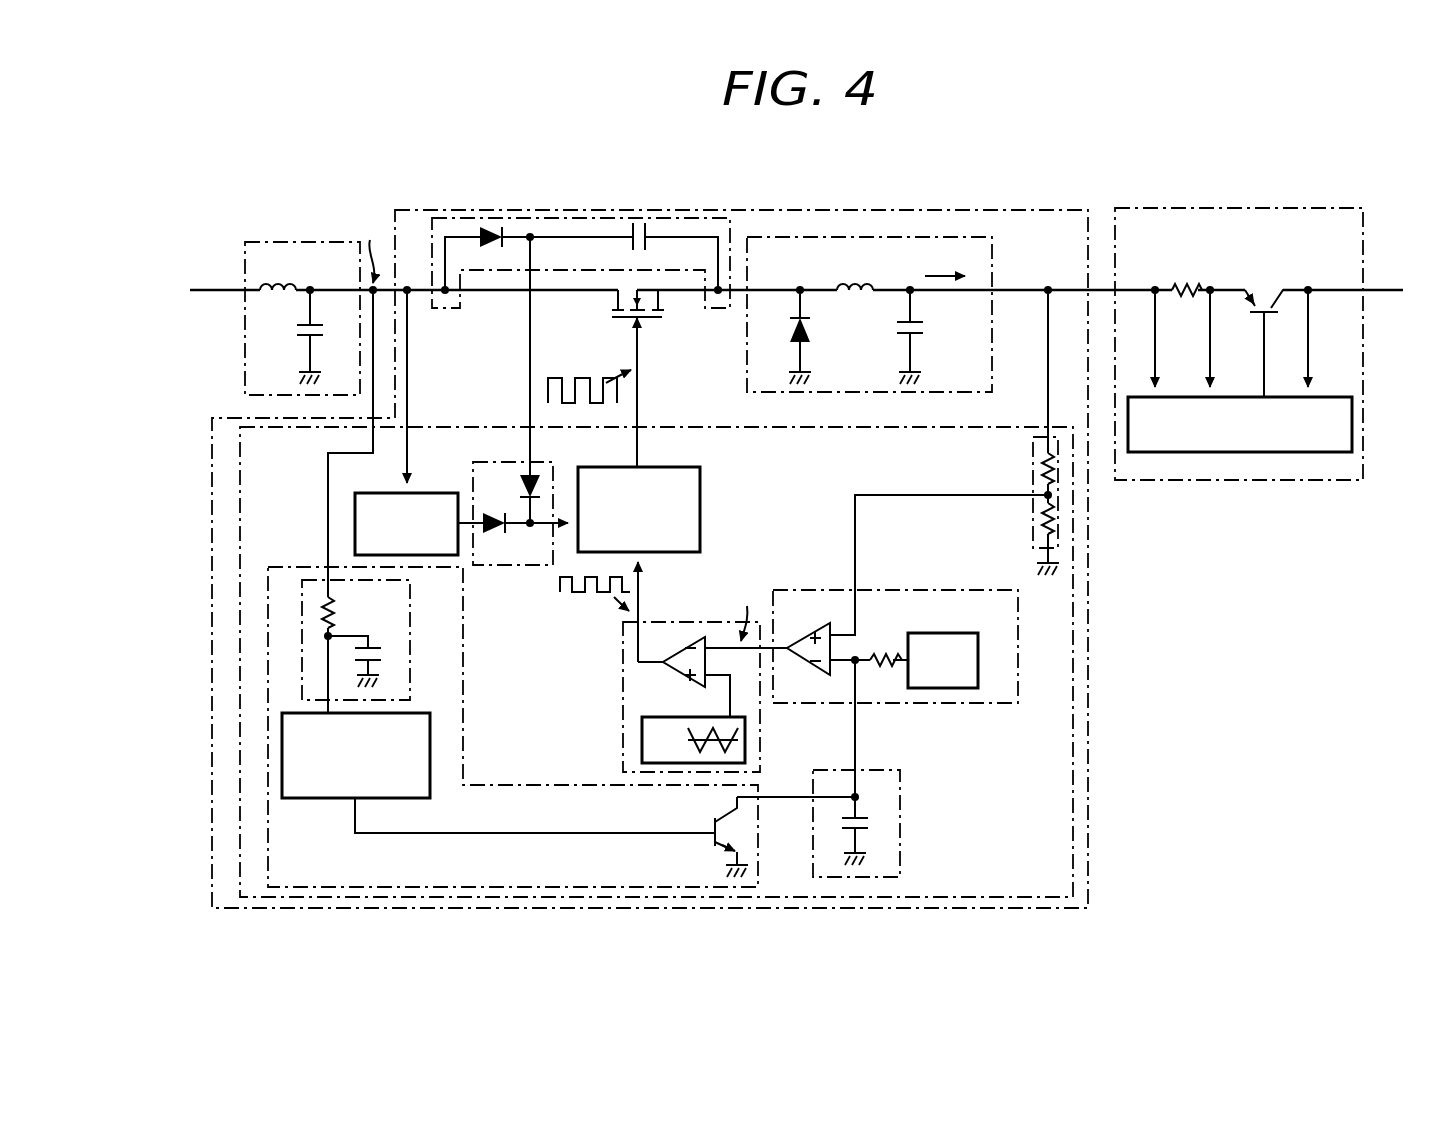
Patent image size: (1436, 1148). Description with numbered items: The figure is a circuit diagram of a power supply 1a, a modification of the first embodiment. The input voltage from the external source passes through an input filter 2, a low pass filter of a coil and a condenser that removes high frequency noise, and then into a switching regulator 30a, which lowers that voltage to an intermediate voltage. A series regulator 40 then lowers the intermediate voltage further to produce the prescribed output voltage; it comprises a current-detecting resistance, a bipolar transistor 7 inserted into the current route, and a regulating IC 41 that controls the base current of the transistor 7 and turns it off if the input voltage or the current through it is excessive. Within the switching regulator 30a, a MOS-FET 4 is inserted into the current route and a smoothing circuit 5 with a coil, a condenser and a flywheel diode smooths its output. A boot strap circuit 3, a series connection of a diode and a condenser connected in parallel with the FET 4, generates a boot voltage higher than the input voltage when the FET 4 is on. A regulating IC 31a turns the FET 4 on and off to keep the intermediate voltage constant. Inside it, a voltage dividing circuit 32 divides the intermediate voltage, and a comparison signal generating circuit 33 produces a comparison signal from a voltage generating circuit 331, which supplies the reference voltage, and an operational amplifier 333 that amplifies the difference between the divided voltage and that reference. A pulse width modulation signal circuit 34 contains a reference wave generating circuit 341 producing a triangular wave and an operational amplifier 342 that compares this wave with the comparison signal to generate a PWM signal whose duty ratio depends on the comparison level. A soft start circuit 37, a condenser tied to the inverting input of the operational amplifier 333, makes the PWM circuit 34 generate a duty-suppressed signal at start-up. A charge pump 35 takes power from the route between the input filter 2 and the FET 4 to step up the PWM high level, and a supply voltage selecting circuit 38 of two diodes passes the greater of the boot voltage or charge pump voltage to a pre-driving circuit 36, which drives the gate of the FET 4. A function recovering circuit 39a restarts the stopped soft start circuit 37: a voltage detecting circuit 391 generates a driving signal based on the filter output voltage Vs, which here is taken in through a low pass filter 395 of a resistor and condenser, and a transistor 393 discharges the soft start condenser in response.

The power supply 1a is at (345, 207).
The input filter 2 is at (283, 242).
The boot strap circuit 3 is at (730, 232).
The MOS-FET 4 is at (670, 321).
The smoothing circuit 5 is at (930, 237).
The bipolar transistor 7 is at (1267, 281).
The switching regulator 30a is at (795, 210).
The regulating IC 31a is at (668, 428).
The voltage dividing circuit 32 is at (1033, 460).
The comparison signal generating circuit 33 is at (965, 590).
The voltage generating circuit 331 is at (945, 633).
The operational amplifier 333 is at (810, 636).
The pulse width modulation signal circuit 34 is at (623, 645).
The reference wave generating circuit 341 is at (745, 730).
The operational amplifier 342 is at (681, 673).
The charge pump 35 is at (432, 493).
The pre-driving circuit 36 is at (700, 487).
The soft start circuit 37 is at (878, 770).
The supply voltage selecting circuit 38 is at (553, 452).
The function recovering circuit 39a is at (503, 787).
The voltage detecting circuit 391 is at (418, 713).
The transistor 393 is at (704, 818).
The low pass filter 395 is at (410, 622).
The series regulator 40 is at (1288, 208).
The regulating IC 41 is at (1320, 397).